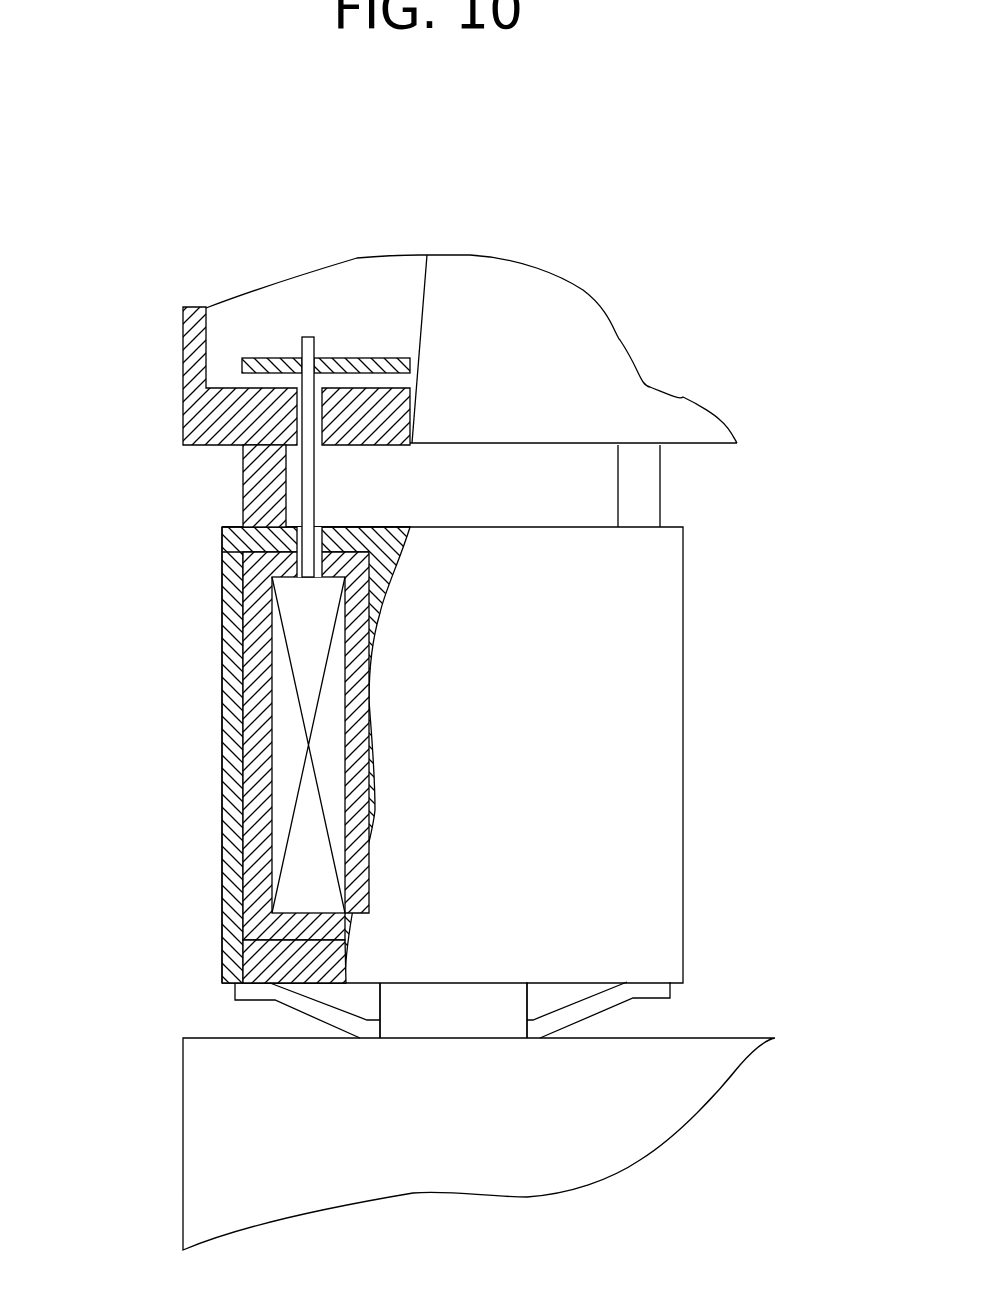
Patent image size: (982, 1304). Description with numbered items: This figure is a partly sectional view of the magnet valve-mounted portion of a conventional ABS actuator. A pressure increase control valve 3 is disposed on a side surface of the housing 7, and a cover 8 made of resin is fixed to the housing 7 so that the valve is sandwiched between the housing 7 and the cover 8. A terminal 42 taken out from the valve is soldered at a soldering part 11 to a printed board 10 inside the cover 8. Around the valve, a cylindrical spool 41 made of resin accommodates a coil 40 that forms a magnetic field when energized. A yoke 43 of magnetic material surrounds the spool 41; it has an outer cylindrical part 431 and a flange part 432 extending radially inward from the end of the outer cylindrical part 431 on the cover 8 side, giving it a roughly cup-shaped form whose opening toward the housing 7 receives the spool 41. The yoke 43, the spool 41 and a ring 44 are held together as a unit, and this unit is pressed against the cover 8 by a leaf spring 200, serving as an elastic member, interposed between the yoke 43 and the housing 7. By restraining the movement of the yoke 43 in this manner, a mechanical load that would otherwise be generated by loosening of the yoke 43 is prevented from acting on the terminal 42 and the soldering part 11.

The pressure increase control valve 3 is at (704, 690).
The housing 7 is at (223, 1115).
The cover 8 is at (183, 385).
The printed board 10 is at (272, 358).
The soldering part 11 is at (320, 357).
The coil 40 is at (280, 776).
The spool 41 is at (257, 831).
The terminal 42 is at (300, 488).
The yoke 43 is at (200, 691).
The ring 44 is at (273, 968).
The leaf spring 200 is at (282, 1008).
The outer cylindrical part 431 is at (240, 612).
The flange part 432 is at (253, 540).